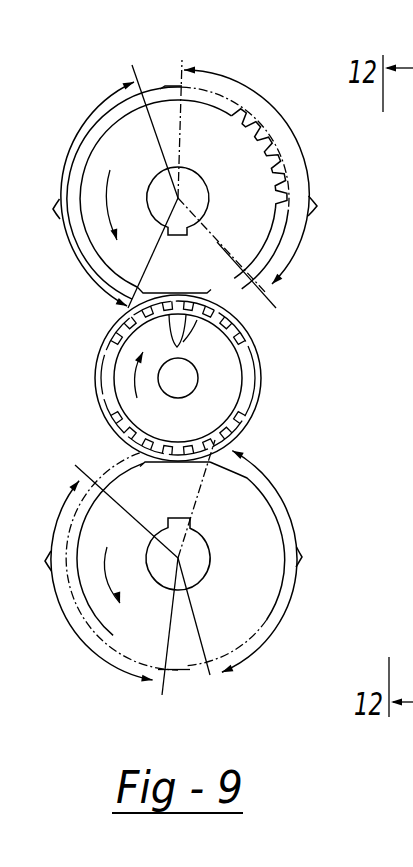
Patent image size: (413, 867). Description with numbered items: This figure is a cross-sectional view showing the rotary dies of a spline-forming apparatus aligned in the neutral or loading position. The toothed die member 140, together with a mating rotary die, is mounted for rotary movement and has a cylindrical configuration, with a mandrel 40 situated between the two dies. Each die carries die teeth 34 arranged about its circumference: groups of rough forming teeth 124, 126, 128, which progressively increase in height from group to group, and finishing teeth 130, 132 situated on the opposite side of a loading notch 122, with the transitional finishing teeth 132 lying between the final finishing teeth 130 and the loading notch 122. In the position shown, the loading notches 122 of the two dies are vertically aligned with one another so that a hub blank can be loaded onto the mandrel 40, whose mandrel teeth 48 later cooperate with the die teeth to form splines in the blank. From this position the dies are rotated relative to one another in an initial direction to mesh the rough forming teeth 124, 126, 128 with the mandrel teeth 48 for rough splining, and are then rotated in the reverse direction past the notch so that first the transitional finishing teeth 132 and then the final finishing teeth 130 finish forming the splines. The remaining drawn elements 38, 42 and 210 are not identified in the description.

The die teeth 34 is at (285, 142).
The inner ring surface 38 is at (226, 111).
The mandrel 40 is at (228, 387).
The toothed ring of pinion 42 is at (258, 372).
The mandrel teeth 48 is at (187, 338).
The loading notch 122 is at (150, 290).
The rough forming teeth 124 is at (122, 303).
The rough forming teeth 126 is at (90, 268).
The rough forming teeth 128 is at (80, 157).
The final finishing teeth 130 is at (286, 237).
The transitional finishing teeth 132 is at (246, 294).
The toothed die member 140 is at (250, 547).
The upper housing 210 is at (330, 210).